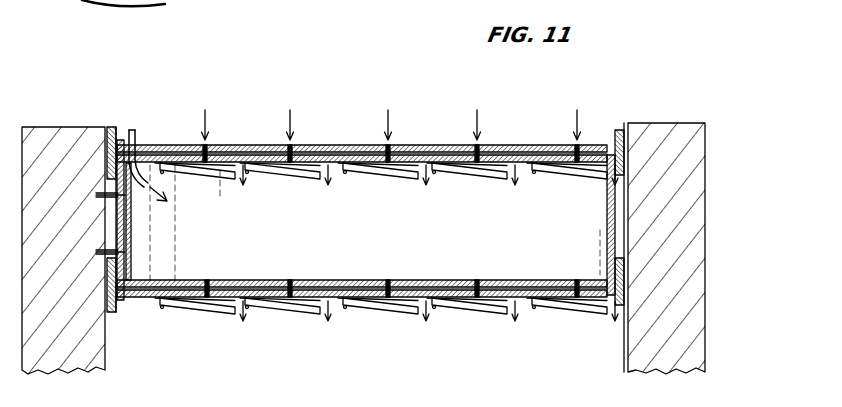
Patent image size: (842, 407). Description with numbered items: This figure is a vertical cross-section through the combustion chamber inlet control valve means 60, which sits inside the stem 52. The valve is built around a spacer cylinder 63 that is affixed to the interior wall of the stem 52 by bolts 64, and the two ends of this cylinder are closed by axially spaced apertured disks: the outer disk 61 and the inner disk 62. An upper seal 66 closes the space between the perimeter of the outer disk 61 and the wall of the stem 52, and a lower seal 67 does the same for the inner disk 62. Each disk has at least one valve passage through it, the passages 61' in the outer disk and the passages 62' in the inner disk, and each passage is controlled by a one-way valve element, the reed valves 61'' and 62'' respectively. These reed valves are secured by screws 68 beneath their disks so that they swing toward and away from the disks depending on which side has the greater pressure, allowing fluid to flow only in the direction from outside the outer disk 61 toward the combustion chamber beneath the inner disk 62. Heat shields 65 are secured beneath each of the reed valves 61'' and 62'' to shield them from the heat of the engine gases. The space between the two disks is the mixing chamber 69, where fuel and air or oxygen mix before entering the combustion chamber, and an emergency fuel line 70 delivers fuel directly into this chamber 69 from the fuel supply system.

The stem 52 is at (57, 138).
The combustion chamber inlet control valve means 60 is at (367, 221).
The outer apertured disk 61 is at (362, 132).
The valve passage 61' is at (391, 131).
The one-way valve element 61'' is at (386, 190).
The inner apertured disk 62 is at (362, 267).
The valve passage 62' is at (392, 268).
The one-way valve element 62'' is at (386, 332).
The spacer cylinder 63 is at (607, 230).
The bolts 64 is at (131, 252).
The heat shields 65 is at (542, 180).
The upper seal 66 is at (112, 127).
The lower seal 67 is at (116, 312).
The screws 68 is at (338, 175).
The mixing chamber 69 is at (383, 237).
The emergency fuel line 70 is at (137, 142).